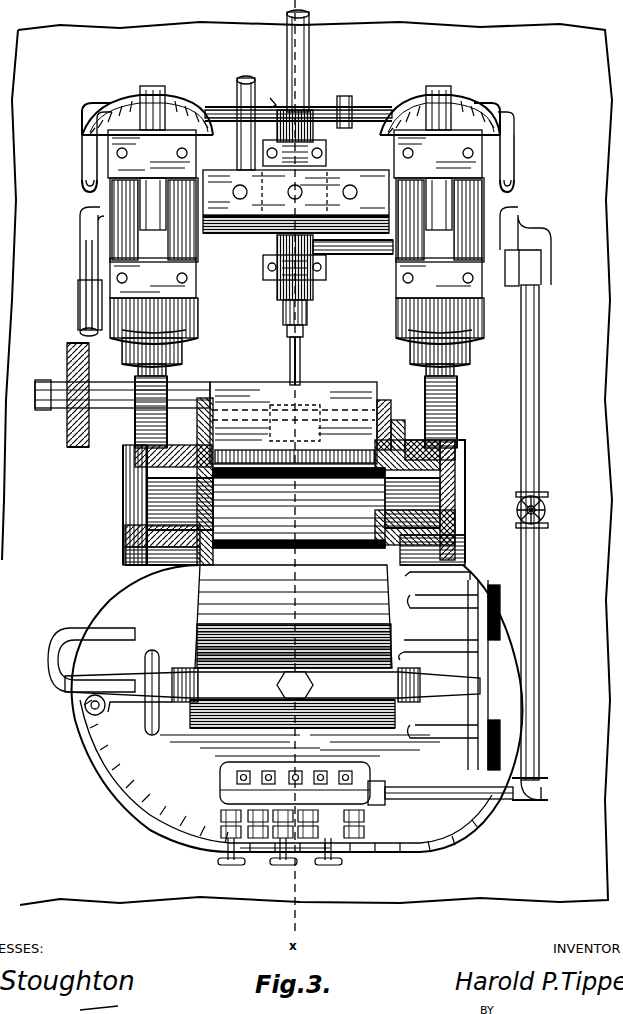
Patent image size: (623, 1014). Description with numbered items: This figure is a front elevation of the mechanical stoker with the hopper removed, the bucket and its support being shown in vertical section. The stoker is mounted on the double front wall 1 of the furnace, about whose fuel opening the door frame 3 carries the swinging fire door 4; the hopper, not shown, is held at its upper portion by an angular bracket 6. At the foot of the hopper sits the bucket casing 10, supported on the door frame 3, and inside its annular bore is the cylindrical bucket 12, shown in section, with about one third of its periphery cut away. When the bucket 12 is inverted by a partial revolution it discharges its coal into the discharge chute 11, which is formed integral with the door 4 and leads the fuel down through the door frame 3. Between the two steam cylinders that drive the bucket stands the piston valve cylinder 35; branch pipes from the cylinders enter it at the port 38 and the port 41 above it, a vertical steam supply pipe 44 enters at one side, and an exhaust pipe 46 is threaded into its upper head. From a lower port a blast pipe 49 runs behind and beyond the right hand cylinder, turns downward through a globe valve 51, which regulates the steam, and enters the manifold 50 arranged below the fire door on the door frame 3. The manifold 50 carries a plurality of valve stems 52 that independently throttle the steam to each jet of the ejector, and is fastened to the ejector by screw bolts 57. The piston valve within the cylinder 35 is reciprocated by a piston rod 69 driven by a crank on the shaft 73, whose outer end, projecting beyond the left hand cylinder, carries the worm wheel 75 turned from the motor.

The double front wall 1 is at (508, 50).
The door frame 3 is at (100, 598).
The fire door 4 is at (175, 755).
The angular bracket 6 is at (362, 175).
The bucket casing 10 is at (340, 400).
The discharge chute 11 is at (200, 575).
The bucket 12 is at (293, 508).
The piston valve cylinder 35 is at (270, 245).
The port 38 is at (330, 247).
The port 41 is at (330, 155).
The steam supply pipe 44 is at (230, 80).
The exhaust pipe 46 is at (312, 58).
The blast pipe 49 is at (568, 422).
The manifold 50 is at (240, 800).
The globe valve 51 is at (547, 508).
The valve stems 52 is at (254, 862).
The screw bolts 57 is at (236, 777).
The piston rod 69 is at (302, 348).
The shaft 73 is at (195, 378).
The worm wheel 75 is at (66, 362).